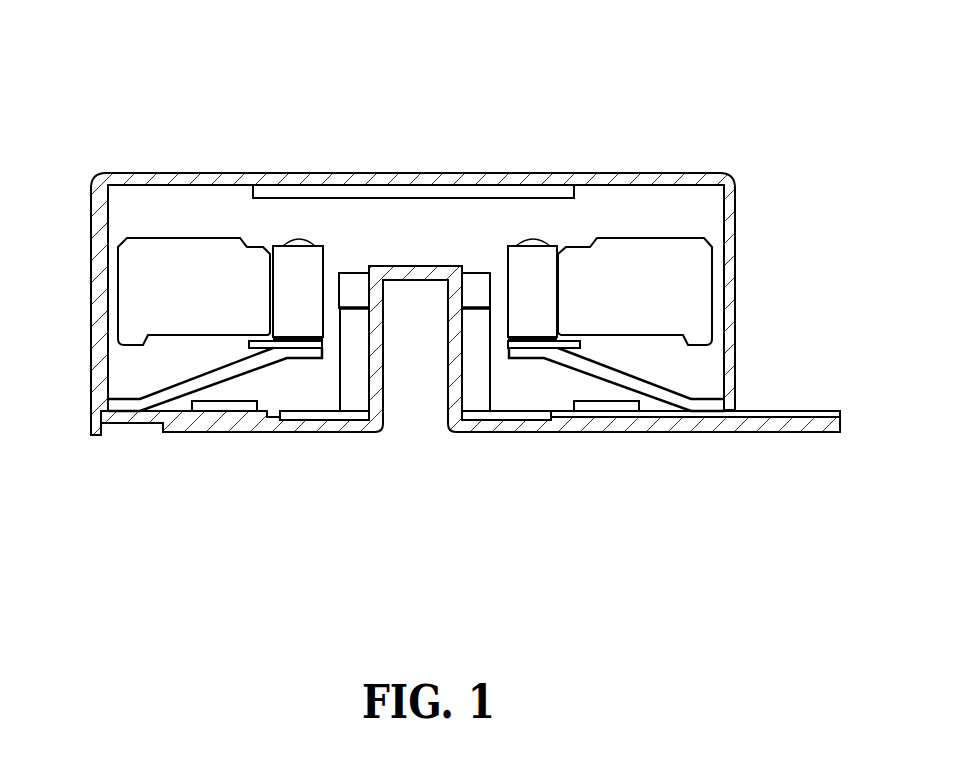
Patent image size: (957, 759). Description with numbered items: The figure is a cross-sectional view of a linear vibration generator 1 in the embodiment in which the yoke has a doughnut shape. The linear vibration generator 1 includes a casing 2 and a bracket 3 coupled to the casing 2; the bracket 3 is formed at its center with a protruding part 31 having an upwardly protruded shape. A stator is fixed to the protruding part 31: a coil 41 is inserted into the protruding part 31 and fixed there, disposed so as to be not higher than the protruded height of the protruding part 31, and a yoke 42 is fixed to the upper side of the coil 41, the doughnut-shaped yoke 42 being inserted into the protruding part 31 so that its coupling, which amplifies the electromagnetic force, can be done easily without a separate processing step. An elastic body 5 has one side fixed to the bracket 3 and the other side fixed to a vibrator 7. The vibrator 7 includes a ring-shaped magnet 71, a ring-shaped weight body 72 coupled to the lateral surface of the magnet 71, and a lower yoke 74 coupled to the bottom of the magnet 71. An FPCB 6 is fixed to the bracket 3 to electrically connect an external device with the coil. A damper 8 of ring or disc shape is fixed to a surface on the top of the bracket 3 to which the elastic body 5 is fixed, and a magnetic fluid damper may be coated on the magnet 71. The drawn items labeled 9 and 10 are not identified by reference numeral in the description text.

The linear vibration generator 1 is at (678, 48).
The casing 2 is at (210, 180).
The bracket 3 is at (685, 426).
The elastic body 5 is at (190, 387).
The FPCB 6 is at (798, 413).
The vibrator 7 is at (675, 207).
The damper 8 is at (225, 407).
The top plate 9 is at (482, 190).
The voice coil 10 is at (287, 243).
The protruding part 31 is at (395, 273).
The coil 41 is at (357, 373).
The yoke 42 is at (357, 293).
The magnet 71 is at (529, 282).
The weight body 72 is at (700, 278).
The lower yoke 74 is at (523, 347).